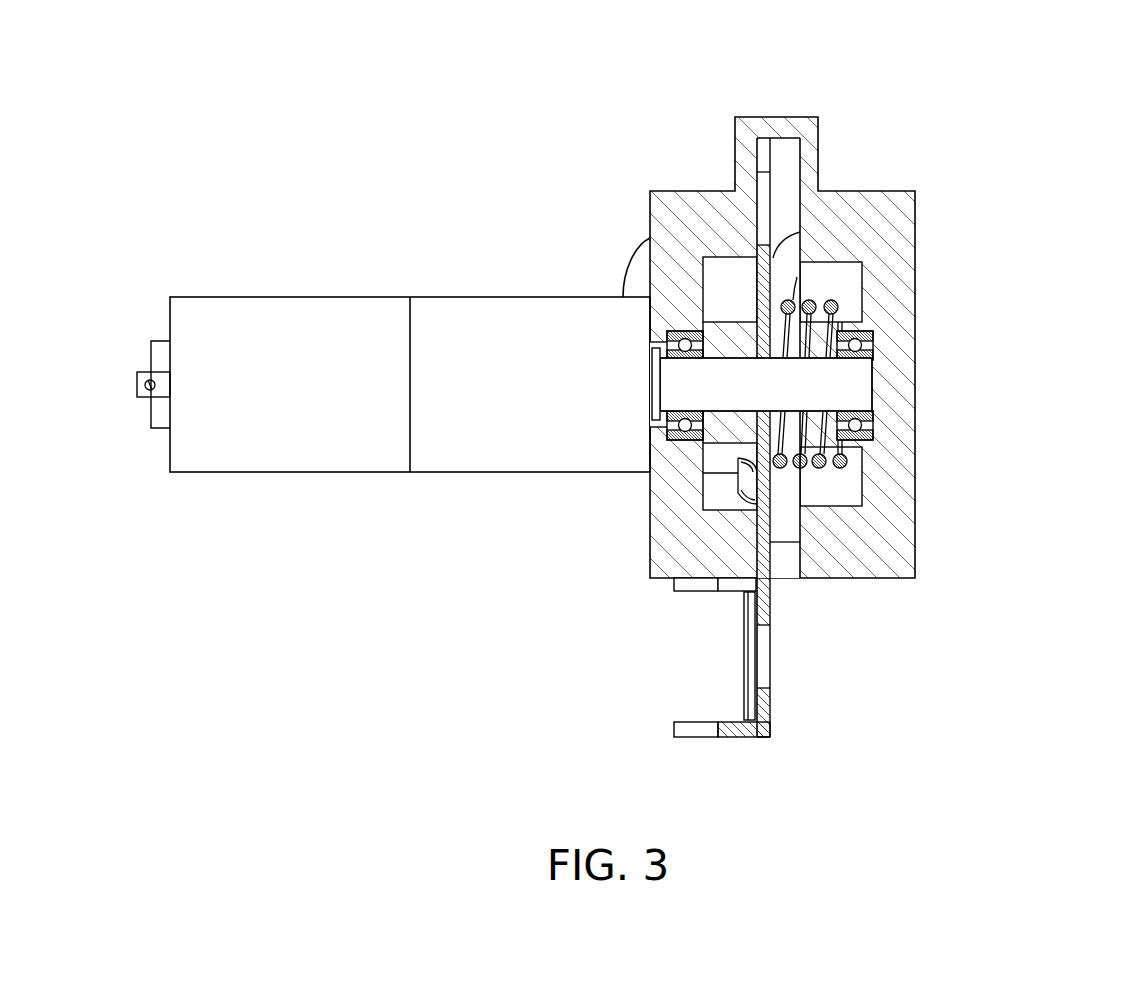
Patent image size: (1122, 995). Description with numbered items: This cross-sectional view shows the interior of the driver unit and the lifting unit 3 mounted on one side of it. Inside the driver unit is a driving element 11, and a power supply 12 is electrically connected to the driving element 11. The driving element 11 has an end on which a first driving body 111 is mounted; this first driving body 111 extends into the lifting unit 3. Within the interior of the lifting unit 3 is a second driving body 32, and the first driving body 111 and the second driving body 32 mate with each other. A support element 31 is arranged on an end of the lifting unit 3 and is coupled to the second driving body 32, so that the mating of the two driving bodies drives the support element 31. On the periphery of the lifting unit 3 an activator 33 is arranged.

The driving element 11 is at (520, 437).
The first driving body 111 is at (853, 386).
The power supply 12 is at (632, 268).
The lifting unit 3 is at (913, 503).
The support element 31 is at (760, 703).
The second driving body 32 is at (740, 345).
The activator 33 is at (762, 198).